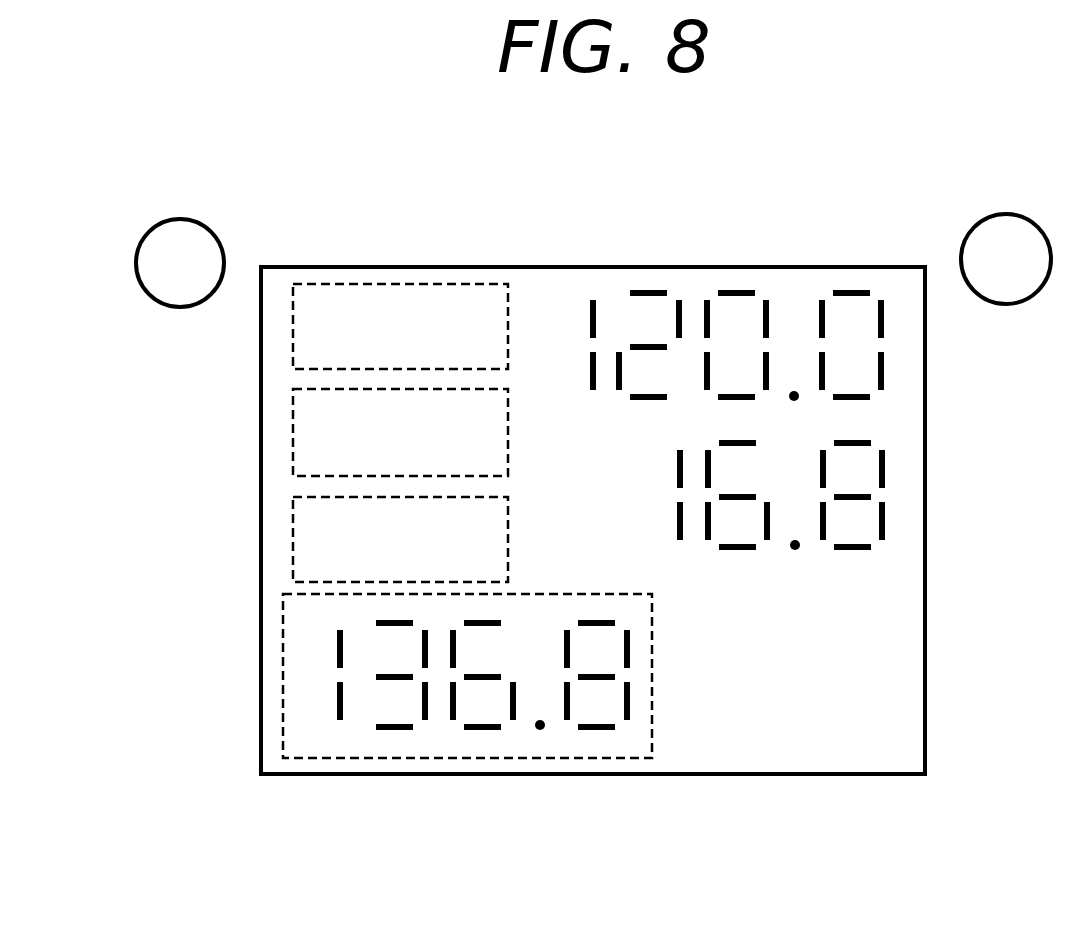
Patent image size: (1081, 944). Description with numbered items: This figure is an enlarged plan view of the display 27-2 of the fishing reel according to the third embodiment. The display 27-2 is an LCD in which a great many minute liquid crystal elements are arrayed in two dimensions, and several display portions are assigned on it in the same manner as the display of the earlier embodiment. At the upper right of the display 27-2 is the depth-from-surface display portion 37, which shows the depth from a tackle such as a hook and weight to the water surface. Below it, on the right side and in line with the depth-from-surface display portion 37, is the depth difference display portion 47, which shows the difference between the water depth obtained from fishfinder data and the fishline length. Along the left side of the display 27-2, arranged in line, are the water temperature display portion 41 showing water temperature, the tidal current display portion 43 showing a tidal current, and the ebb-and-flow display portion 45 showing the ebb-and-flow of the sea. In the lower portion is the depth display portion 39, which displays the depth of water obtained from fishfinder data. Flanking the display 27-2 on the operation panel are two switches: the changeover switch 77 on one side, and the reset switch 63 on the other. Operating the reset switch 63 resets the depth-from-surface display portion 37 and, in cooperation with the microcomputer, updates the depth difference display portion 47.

The display 27-2 is at (521, 258).
The changeover switch 77 is at (187, 219).
The reset switch 63 is at (1010, 216).
The water temperature display portion 41 is at (293, 341).
The tidal current display portion 43 is at (293, 418).
The ebb-and-flow display portion 45 is at (293, 523).
The depth-from-surface display portion 37 is at (733, 316).
The depth difference display portion 47 is at (793, 478).
The depth display portion 39 is at (343, 760).